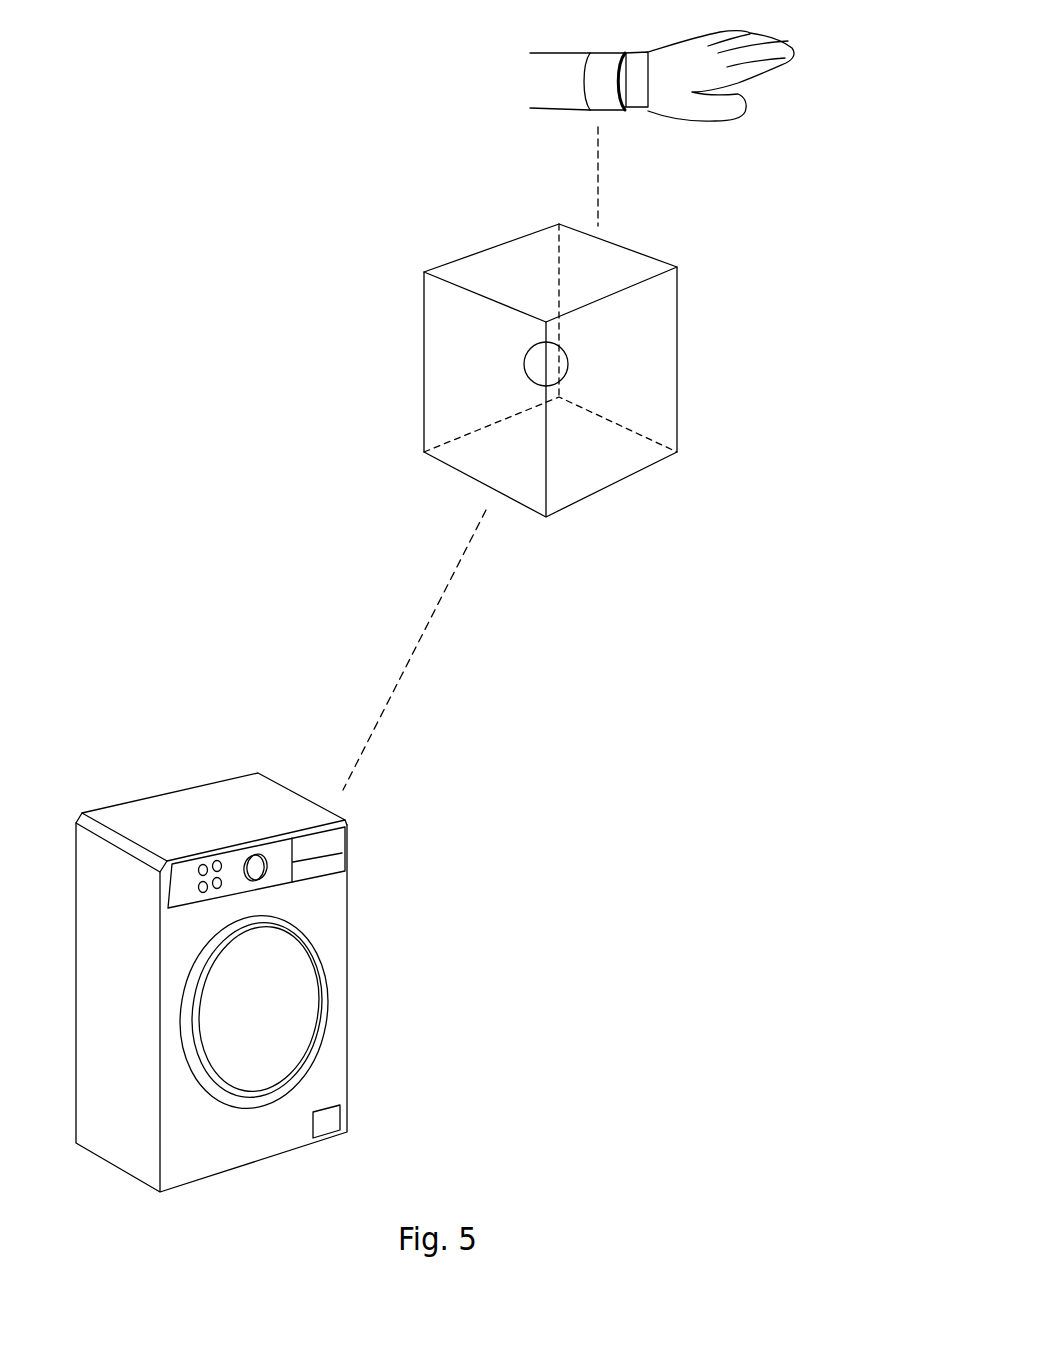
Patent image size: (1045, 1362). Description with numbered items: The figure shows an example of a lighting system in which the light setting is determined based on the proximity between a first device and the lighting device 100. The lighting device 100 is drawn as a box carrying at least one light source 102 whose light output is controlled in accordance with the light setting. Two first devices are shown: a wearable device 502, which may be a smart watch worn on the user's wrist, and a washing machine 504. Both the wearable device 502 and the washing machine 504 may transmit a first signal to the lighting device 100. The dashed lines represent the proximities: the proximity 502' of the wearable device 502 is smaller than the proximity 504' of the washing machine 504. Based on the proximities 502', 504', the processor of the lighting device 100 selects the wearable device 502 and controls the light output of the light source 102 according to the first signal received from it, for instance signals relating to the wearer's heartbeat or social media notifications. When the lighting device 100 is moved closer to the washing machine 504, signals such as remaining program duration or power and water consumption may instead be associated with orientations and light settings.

The wearable device 502 is at (551, 81).
The proximity of the wearable device 502' is at (674, 176).
The lighting device 100 is at (597, 472).
The light source 102 is at (550, 370).
The proximity of the washing machine 504' is at (473, 650).
The washing machine 504 is at (275, 982).